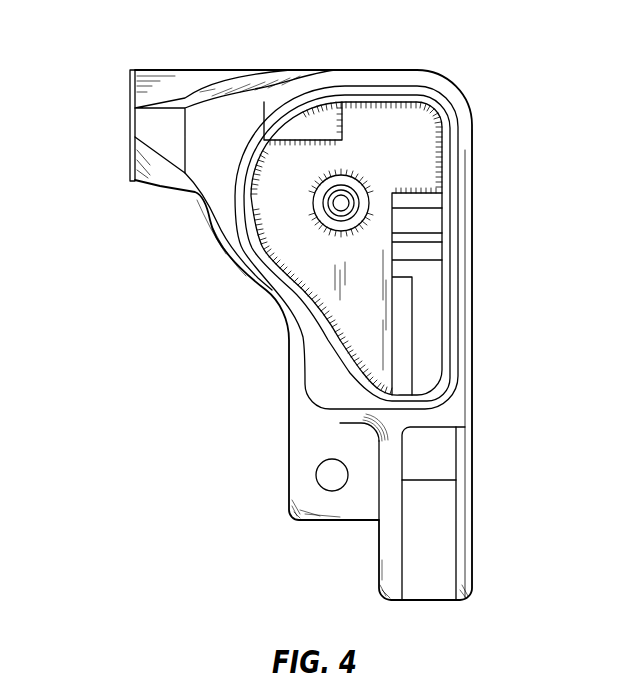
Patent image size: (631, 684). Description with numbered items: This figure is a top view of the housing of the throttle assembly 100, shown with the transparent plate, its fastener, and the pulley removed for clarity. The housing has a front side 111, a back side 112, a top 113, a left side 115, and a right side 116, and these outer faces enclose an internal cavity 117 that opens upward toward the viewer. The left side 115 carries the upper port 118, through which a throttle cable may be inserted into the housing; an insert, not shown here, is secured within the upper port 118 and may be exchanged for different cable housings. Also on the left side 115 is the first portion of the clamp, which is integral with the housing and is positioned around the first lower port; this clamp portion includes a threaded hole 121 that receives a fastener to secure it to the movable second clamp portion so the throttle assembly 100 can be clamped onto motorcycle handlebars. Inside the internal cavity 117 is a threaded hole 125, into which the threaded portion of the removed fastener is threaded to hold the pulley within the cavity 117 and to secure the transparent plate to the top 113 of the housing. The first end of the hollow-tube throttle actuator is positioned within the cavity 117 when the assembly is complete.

The throttle assembly 100 is at (496, 57).
The front side 111 is at (266, 72).
The back side 112 is at (430, 601).
The top 113 is at (432, 458).
The left side 115 is at (245, 284).
The right side 116 is at (472, 312).
The internal cavity 117 is at (398, 132).
The upper port 118 is at (124, 127).
The threaded hole 121 is at (317, 476).
The threaded hole 125 is at (342, 203).